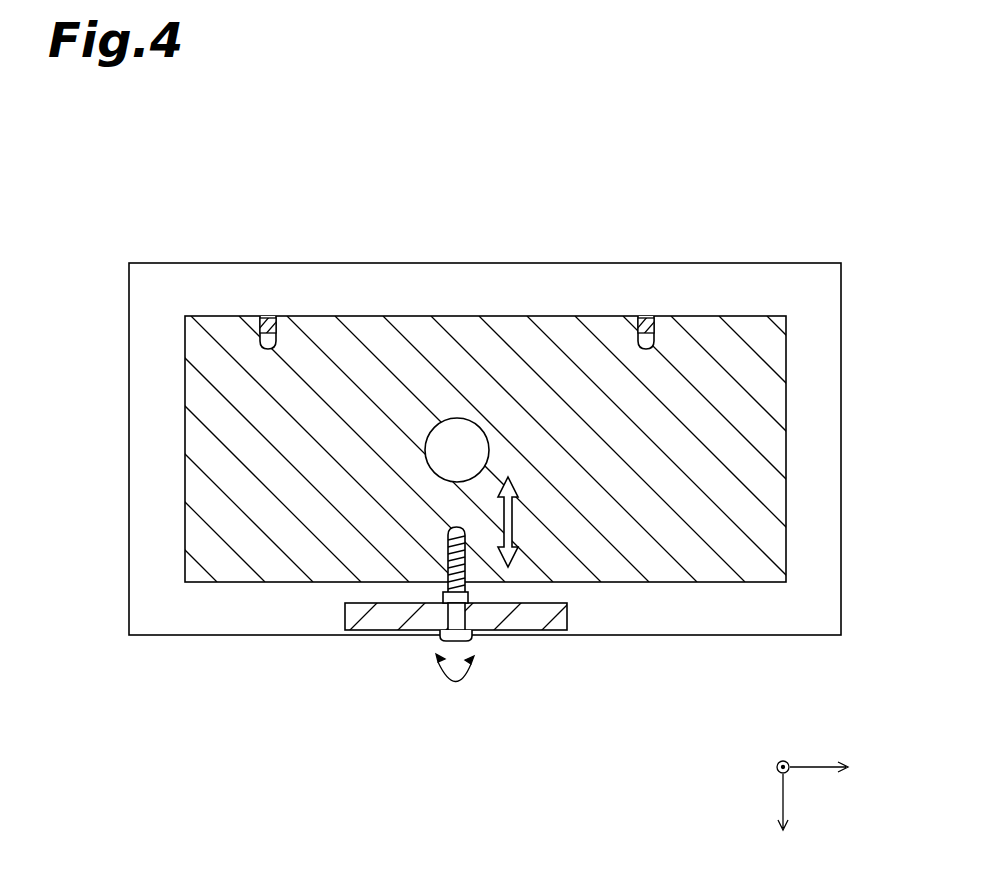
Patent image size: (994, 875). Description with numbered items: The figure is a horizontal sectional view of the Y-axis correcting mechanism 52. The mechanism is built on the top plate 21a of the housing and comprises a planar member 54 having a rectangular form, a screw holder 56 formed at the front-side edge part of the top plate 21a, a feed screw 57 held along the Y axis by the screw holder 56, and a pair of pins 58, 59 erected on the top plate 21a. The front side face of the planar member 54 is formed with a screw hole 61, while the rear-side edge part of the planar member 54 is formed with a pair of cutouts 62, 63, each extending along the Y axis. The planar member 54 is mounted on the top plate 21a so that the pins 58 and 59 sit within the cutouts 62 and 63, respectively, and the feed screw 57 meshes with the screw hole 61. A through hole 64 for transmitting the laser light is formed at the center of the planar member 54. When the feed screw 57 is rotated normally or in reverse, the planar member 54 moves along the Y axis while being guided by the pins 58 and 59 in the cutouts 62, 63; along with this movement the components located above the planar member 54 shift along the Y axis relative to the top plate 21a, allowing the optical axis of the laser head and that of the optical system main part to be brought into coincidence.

The Y-axis correcting mechanism 52 is at (796, 198).
The top plate 21a is at (146, 482).
The planar member 54 is at (775, 483).
The screw holder 56 is at (365, 640).
The feed screw 57 is at (458, 640).
The pin 58 is at (268, 318).
The pin 59 is at (645, 318).
The screw hole 61 is at (448, 534).
The cutout 62 is at (271, 318).
The cutout 63 is at (649, 318).
The through hole 64 is at (473, 428).